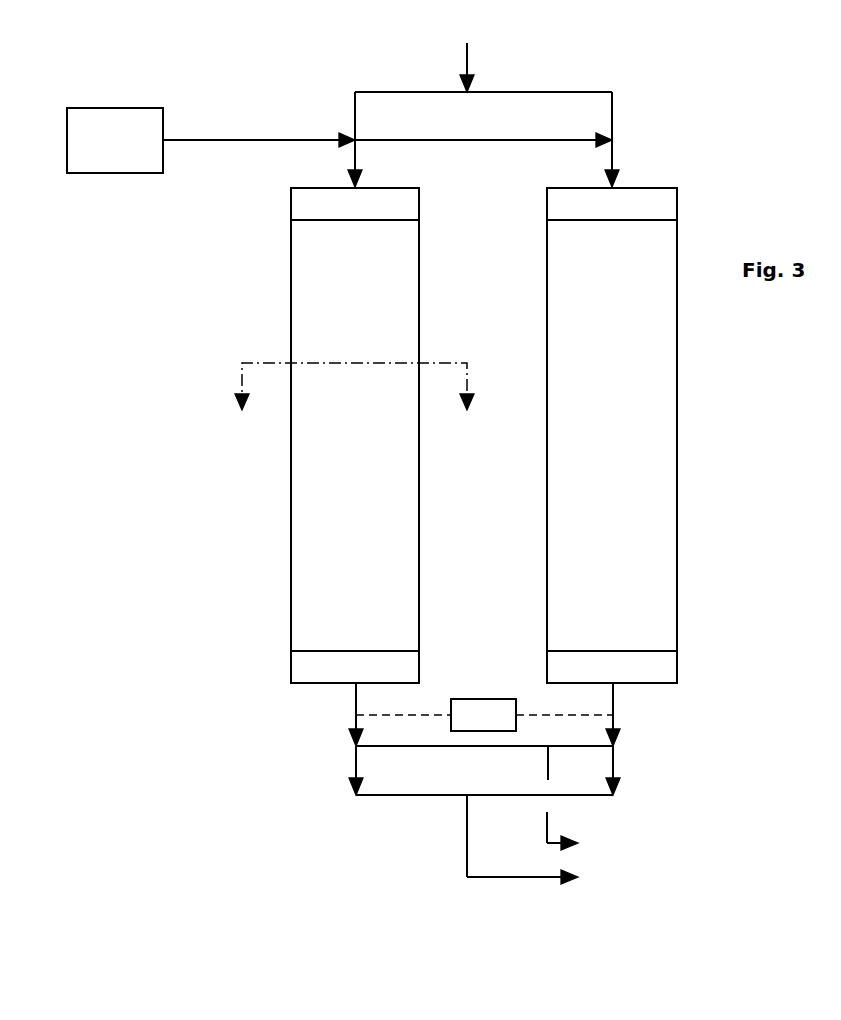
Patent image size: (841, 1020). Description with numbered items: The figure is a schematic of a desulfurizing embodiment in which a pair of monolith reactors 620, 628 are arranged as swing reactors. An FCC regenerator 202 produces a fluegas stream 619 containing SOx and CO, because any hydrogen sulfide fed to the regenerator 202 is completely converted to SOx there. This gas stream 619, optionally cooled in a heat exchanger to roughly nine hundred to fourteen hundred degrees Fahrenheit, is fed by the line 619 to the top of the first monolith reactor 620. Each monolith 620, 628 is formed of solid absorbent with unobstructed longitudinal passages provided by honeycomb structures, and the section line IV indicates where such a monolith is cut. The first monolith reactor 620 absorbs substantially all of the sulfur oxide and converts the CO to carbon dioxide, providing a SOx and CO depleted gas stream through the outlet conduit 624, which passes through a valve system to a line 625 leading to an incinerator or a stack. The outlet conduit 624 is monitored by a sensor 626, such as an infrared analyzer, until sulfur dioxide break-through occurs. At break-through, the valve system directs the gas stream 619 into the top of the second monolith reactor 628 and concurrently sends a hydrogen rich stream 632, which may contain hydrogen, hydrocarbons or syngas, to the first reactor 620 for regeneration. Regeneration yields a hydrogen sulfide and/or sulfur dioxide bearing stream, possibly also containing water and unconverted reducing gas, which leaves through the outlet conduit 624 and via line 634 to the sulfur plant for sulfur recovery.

The FCC regenerator 202 is at (138, 150).
The fluegas stream 619 is at (297, 116).
The hydrogen rich stream 632 is at (476, 54).
The first monolith reactor 620 is at (291, 573).
The second monolith reactor 628 is at (684, 573).
The sensor 626 is at (521, 668).
The outlet conduit 624 is at (350, 722).
The line to sulfur plant 634 is at (553, 831).
The line to incinerator or stack 625 is at (546, 885).
The section line IV- IV is at (354, 400).